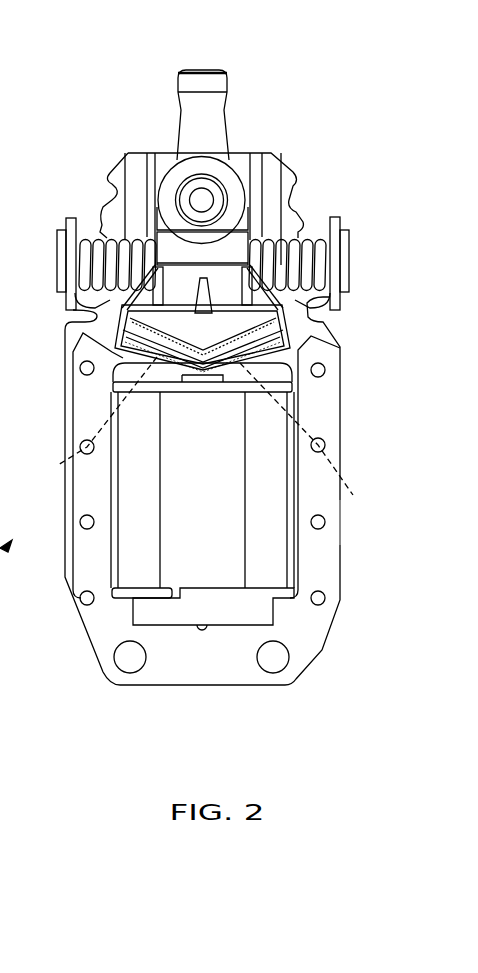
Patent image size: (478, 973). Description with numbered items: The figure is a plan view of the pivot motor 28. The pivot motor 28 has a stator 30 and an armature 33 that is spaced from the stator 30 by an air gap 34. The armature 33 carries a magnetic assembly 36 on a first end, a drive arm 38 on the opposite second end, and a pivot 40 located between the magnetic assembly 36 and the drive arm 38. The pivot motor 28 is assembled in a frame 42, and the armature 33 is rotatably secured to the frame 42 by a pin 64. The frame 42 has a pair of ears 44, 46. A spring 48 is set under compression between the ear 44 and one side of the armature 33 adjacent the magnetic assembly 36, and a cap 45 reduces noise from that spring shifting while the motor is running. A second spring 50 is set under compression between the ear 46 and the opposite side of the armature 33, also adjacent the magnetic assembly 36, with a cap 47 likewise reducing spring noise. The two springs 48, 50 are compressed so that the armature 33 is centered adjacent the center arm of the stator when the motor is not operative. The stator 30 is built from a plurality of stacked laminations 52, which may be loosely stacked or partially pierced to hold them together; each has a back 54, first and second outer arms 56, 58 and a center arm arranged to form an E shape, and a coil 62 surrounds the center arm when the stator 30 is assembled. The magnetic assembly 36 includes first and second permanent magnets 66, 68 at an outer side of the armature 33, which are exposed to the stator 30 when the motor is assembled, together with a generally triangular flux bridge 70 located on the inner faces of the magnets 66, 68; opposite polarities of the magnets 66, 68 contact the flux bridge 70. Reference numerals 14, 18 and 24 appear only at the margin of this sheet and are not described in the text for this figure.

The cylinder 14 is at (4, 239).
The piston 18 is at (6, 20).
The drive member 24 is at (6, 87).
The pivot motor 28 is at (4, 159).
The stator 30 is at (330, 522).
The armature 33 is at (148, 78).
The air gap 34 is at (123, 358).
The magnetic assembly 36 is at (293, 330).
The drive arm 38 is at (222, 110).
The pivot 40 is at (233, 200).
The frame 42 is at (137, 167).
The ear 44 is at (335, 298).
The cap 45 is at (346, 255).
The ear 46 is at (72, 303).
The cap 47 is at (60, 270).
The spring 48 is at (313, 250).
The second spring 50 is at (110, 238).
The laminations 52 is at (317, 652).
The back 54 is at (198, 673).
The first outer arm 56 is at (73, 497).
The second outer arm 58 is at (328, 570).
The coil 62 is at (133, 562).
The pin 64 is at (200, 201).
The first permanent magnet 66 is at (58, 460).
The second permanent magnet 68 is at (355, 497).
The flux bridge 70 is at (267, 362).